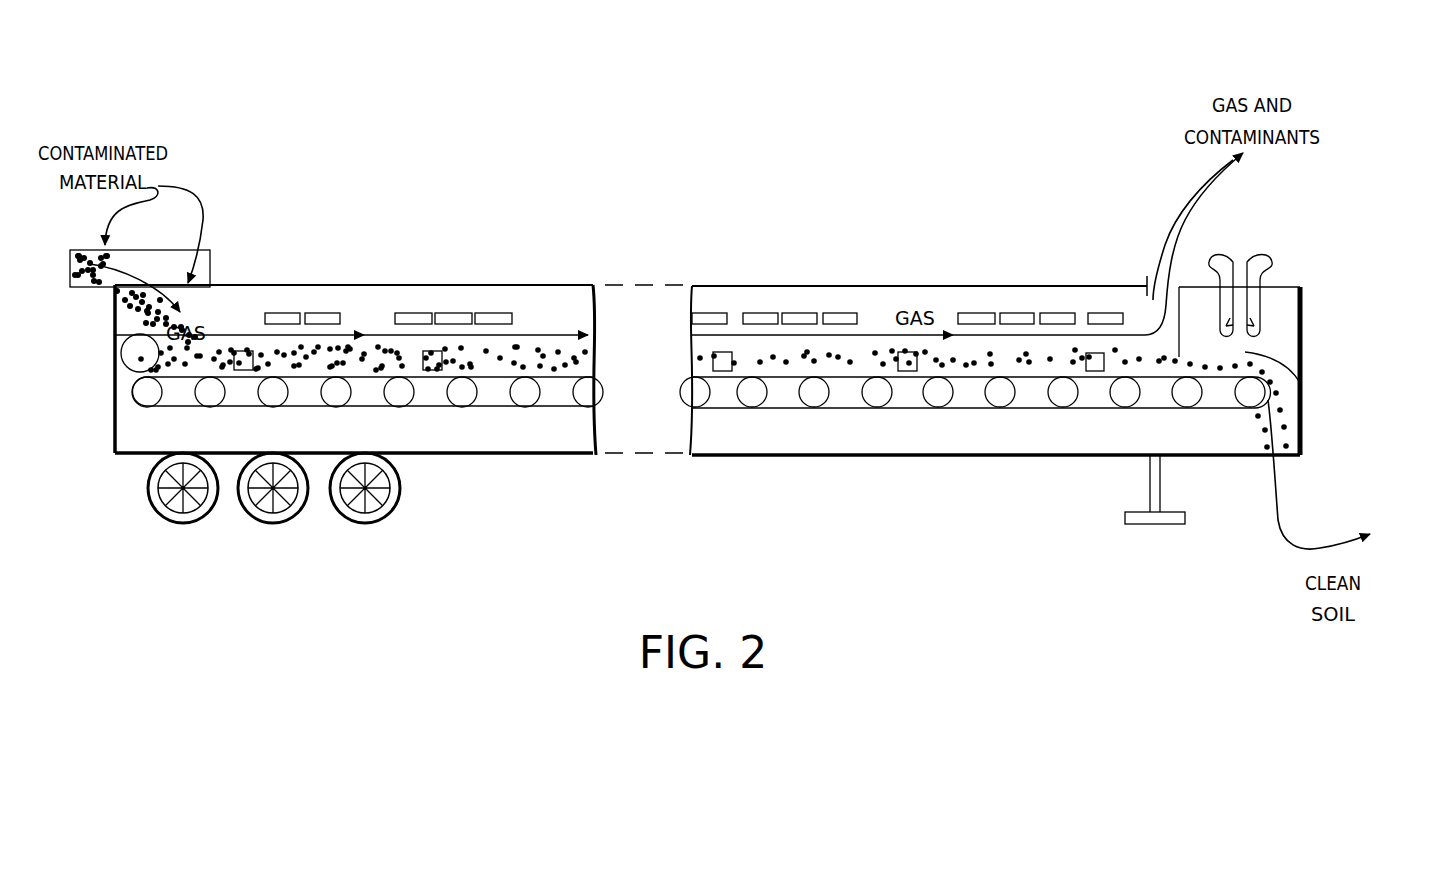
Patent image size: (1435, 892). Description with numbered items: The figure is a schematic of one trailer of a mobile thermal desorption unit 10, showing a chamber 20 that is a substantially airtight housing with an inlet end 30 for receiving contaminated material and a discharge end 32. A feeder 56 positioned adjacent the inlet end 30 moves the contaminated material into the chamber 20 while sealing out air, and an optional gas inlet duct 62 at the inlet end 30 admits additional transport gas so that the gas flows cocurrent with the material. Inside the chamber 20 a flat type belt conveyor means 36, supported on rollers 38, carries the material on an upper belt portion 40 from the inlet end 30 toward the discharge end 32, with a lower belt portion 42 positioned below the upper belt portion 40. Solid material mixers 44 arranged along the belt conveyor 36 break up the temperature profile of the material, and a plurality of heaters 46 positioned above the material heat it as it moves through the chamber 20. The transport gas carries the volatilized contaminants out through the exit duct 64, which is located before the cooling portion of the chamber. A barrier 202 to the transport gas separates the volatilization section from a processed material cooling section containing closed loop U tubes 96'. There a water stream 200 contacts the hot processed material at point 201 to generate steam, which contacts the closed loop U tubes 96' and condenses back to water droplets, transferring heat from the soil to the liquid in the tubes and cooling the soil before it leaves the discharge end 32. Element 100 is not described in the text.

The thermal desorption unit 10 is at (588, 215).
The chamber 20 is at (473, 283).
The inlet end 30 is at (115, 427).
The discharge end 32 is at (1305, 446).
The belt conveyor means 36 is at (567, 376).
The rollers 38 is at (878, 402).
The upper belt portion 40 is at (495, 378).
The lower belt portion 42 is at (982, 409).
The solid material mixers 44 is at (243, 351).
The heaters 46 is at (283, 313).
The feeder 56 is at (72, 272).
The gas inlet duct 62 is at (122, 350).
The exit duct 64 is at (1165, 246).
The closed loop U tubes 96' is at (1240, 288).
The support leg 100 is at (1030, 457).
The water stream 200 is at (1275, 344).
The point of water contact 201 is at (1300, 383).
The barrier 202 is at (1178, 340).